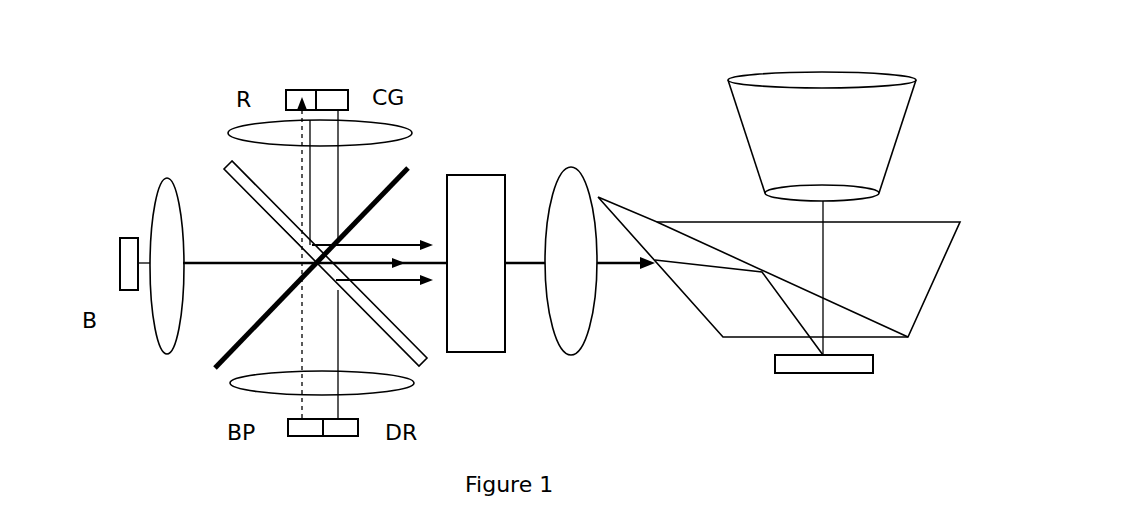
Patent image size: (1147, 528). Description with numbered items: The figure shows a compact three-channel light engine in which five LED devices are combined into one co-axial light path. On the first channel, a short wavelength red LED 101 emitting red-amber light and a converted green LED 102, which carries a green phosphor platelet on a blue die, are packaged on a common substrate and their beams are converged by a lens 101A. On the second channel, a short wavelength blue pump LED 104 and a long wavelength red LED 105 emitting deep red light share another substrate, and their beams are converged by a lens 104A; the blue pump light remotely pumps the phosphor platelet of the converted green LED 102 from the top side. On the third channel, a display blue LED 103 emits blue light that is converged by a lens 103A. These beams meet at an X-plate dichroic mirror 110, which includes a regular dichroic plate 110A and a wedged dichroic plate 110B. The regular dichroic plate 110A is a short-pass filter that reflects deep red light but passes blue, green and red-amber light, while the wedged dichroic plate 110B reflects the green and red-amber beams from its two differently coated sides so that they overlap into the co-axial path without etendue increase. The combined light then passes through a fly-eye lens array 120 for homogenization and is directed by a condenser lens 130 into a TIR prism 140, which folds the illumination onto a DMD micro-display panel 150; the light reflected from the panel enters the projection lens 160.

The short wavelength red LED 101 is at (293, 88).
The converted green LED 102 is at (330, 88).
The lens 101A is at (413, 130).
The display blue LED 103 is at (118, 245).
The lens 103A is at (165, 350).
The short wavelength blue pump LED 104 is at (302, 437).
The long wavelength red LED 105 is at (343, 437).
The lens 104A is at (415, 392).
The X-plate dichroic mirror 110 is at (287, 187).
The regular dichroic plate 110A is at (410, 167).
The wedged dichroic plate 110B is at (259, 217).
The fly-eye lens array 120 is at (494, 353).
The condenser lens 130 is at (572, 167).
The TIR prism 140 is at (715, 327).
The DMD micro-display panel 150 is at (848, 377).
The projection lens 160 is at (903, 120).